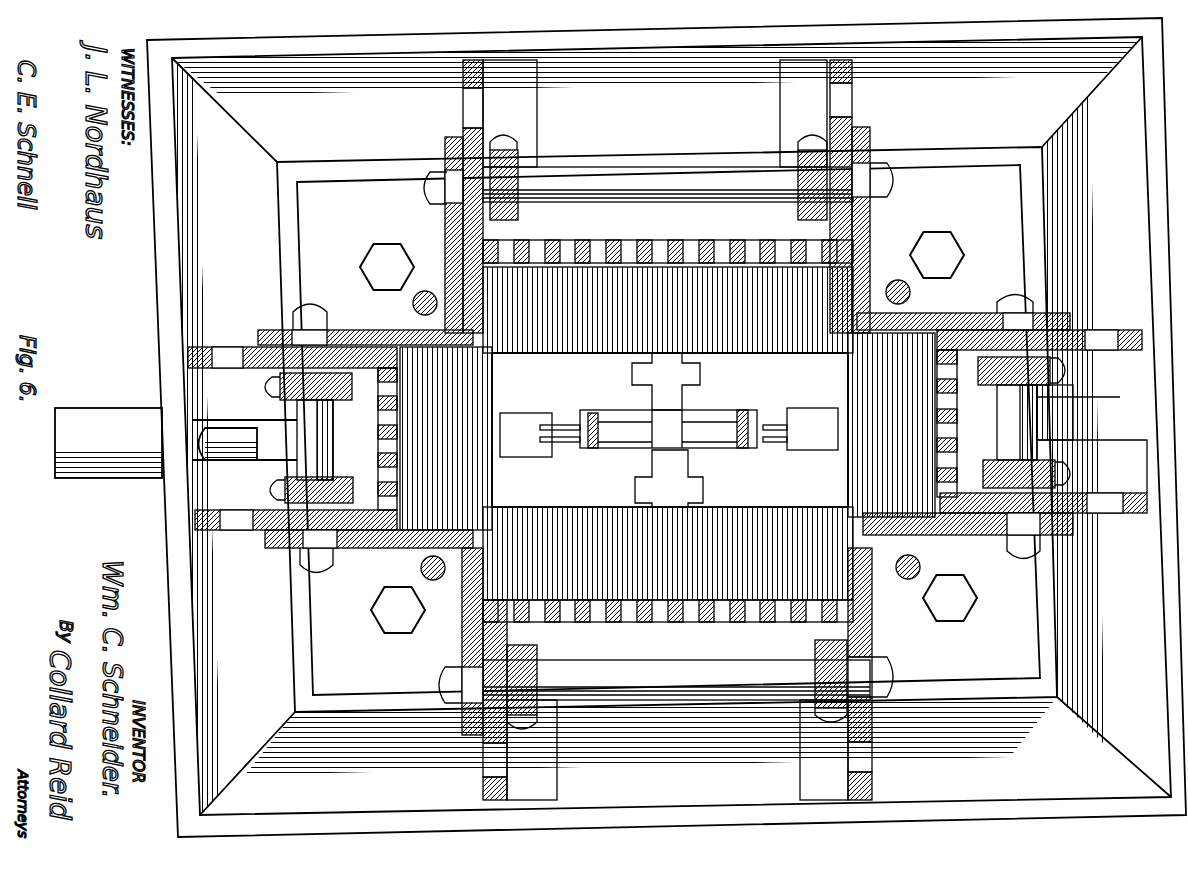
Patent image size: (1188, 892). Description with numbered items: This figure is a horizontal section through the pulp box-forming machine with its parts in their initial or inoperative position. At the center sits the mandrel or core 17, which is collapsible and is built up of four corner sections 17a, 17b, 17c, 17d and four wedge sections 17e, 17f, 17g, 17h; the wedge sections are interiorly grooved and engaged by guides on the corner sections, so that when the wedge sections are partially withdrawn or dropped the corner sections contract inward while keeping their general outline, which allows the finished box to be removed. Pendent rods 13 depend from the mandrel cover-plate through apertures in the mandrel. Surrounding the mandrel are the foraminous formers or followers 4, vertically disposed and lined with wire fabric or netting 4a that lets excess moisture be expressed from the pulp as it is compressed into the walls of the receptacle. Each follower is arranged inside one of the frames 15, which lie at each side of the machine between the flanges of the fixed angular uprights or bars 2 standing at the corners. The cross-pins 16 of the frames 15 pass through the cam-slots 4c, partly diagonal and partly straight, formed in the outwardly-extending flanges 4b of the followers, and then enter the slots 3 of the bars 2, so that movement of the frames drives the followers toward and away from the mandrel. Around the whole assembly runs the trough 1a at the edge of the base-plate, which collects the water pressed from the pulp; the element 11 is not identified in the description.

The trough 1a is at (620, 427).
The angular uprights or bars 2 is at (392, 322).
The slots of the bars 3 is at (428, 192).
The foraminous former or follower 4 is at (681, 252).
The wire fabric or netting 4a is at (686, 268).
The outwardly-extending flanges or extensions 4b is at (487, 246).
The cam-slots 4c is at (468, 104).
The nuts 11 is at (426, 292).
The pendent rods 13 is at (747, 412).
The frames 15 is at (800, 210).
The cross-pins 16 is at (641, 196).
The mandrel or core 17 is at (766, 507).
The corner section 17a is at (562, 381).
The corner section 17b is at (788, 352).
The corner section 17c is at (784, 478).
The corner section 17d is at (556, 478).
The wedge section 17e is at (540, 435).
The wedge section 17f is at (666, 381).
The wedge section 17g is at (800, 429).
The wedge section 17h is at (669, 478).